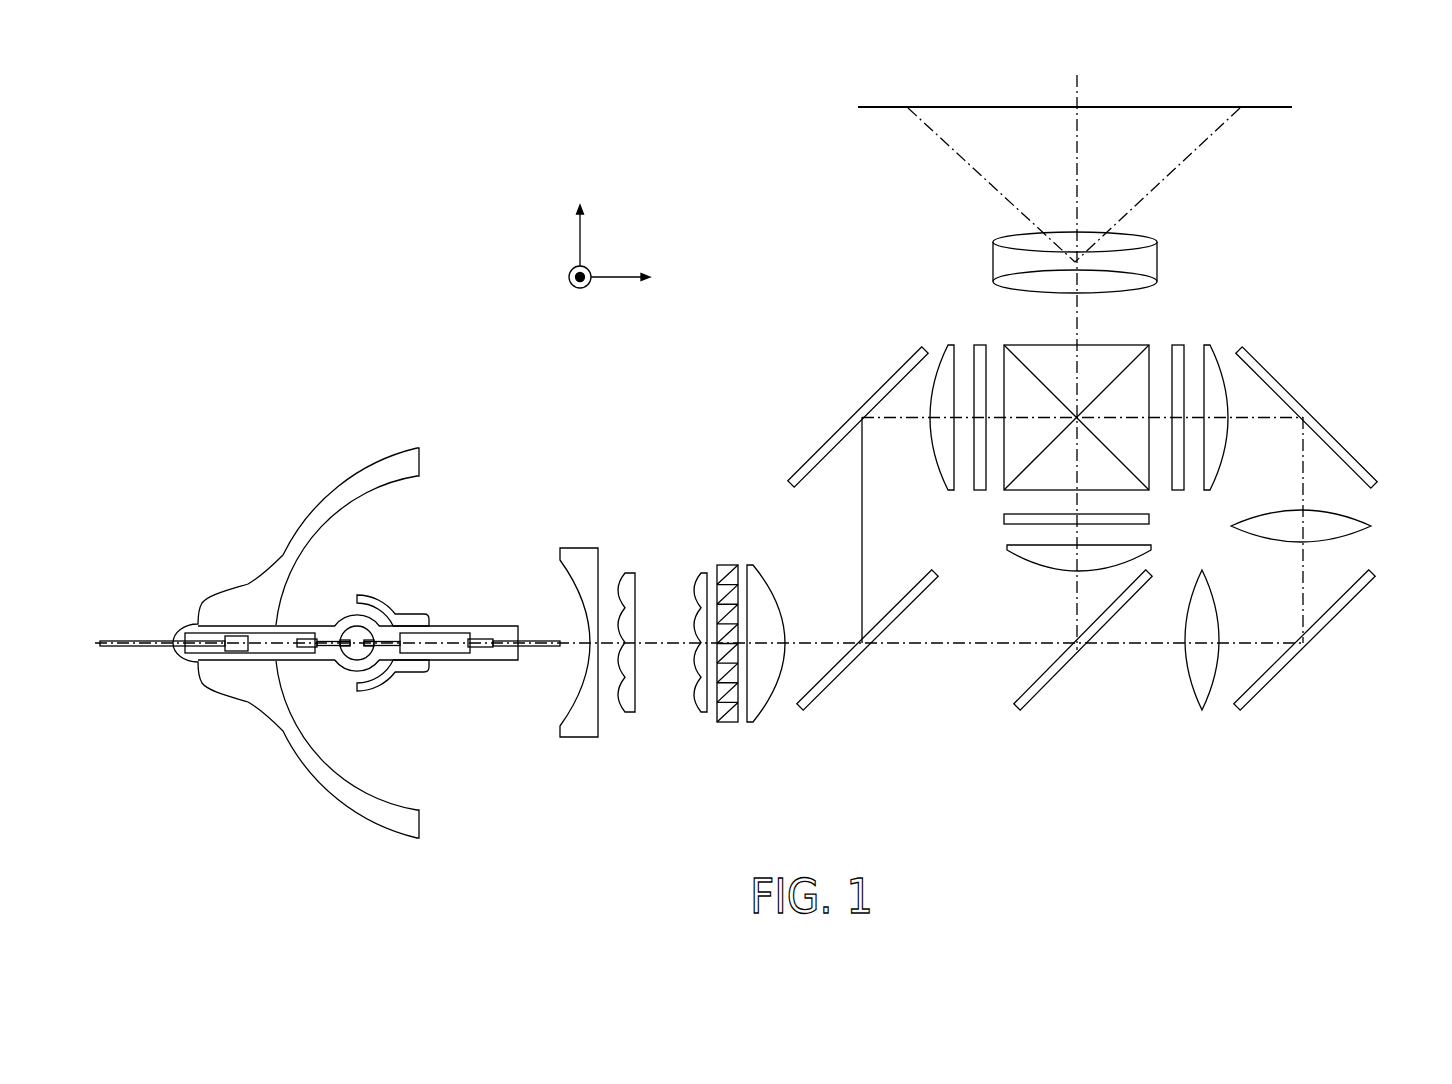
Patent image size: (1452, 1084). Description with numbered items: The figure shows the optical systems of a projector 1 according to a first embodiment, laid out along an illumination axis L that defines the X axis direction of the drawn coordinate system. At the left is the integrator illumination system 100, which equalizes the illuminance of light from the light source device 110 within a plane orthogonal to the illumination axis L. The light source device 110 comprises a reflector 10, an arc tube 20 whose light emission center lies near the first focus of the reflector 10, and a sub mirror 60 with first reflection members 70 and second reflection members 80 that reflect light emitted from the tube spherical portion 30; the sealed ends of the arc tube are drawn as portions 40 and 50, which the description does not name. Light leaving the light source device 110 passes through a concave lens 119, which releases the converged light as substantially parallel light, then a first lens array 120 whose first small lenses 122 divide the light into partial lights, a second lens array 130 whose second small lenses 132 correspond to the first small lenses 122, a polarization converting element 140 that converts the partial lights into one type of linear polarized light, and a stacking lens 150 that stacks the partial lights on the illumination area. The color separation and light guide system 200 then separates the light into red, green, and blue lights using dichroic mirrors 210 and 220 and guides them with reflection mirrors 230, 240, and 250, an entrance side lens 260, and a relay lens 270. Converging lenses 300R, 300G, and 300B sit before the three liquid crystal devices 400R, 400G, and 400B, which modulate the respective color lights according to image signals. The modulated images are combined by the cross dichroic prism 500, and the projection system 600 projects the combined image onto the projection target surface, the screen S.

The projector 1 is at (288, 356).
The reflector 10 is at (275, 513).
The arc tube 20 is at (342, 605).
The tube spherical portion 30 is at (340, 673).
The first sealing portion 40 is at (303, 662).
The second sealing portion 50 is at (467, 662).
The sub mirror 60 is at (394, 580).
The first reflection members 70 is at (370, 593).
The second reflection members 80 is at (382, 690).
The integrator illumination system 100 is at (770, 442).
The light source device 110 is at (281, 812).
The concave lens 119 is at (580, 740).
The first lens array 120 is at (627, 713).
The first small lenses 122 is at (622, 573).
The second lens array 130 is at (702, 713).
The second small lenses 132 is at (693, 573).
The polarization converting element 140 is at (725, 723).
The stacking lens 150 is at (750, 725).
The color separation and light guide system 200 is at (1091, 767).
The dichroic mirror 210 is at (826, 688).
The dichroic mirror 220 is at (1037, 698).
The reflection mirror 230 is at (829, 440).
The reflection mirror 240 is at (1268, 690).
The reflection mirror 250 is at (1324, 428).
The entrance side lens 260 is at (1192, 698).
The relay lens 270 is at (1350, 540).
The converging lens 300R is at (950, 340).
The converging lens 300G is at (1033, 562).
The converging lens 300B is at (1205, 340).
The liquid crystal device 400R is at (975, 340).
The liquid crystal device 400G is at (1004, 519).
The liquid crystal device 400B is at (1176, 340).
The cross dichroic prism 500 is at (1053, 342).
The projection system 600 is at (1157, 260).
The screen S is at (1272, 110).
The illumination axis L is at (572, 640).